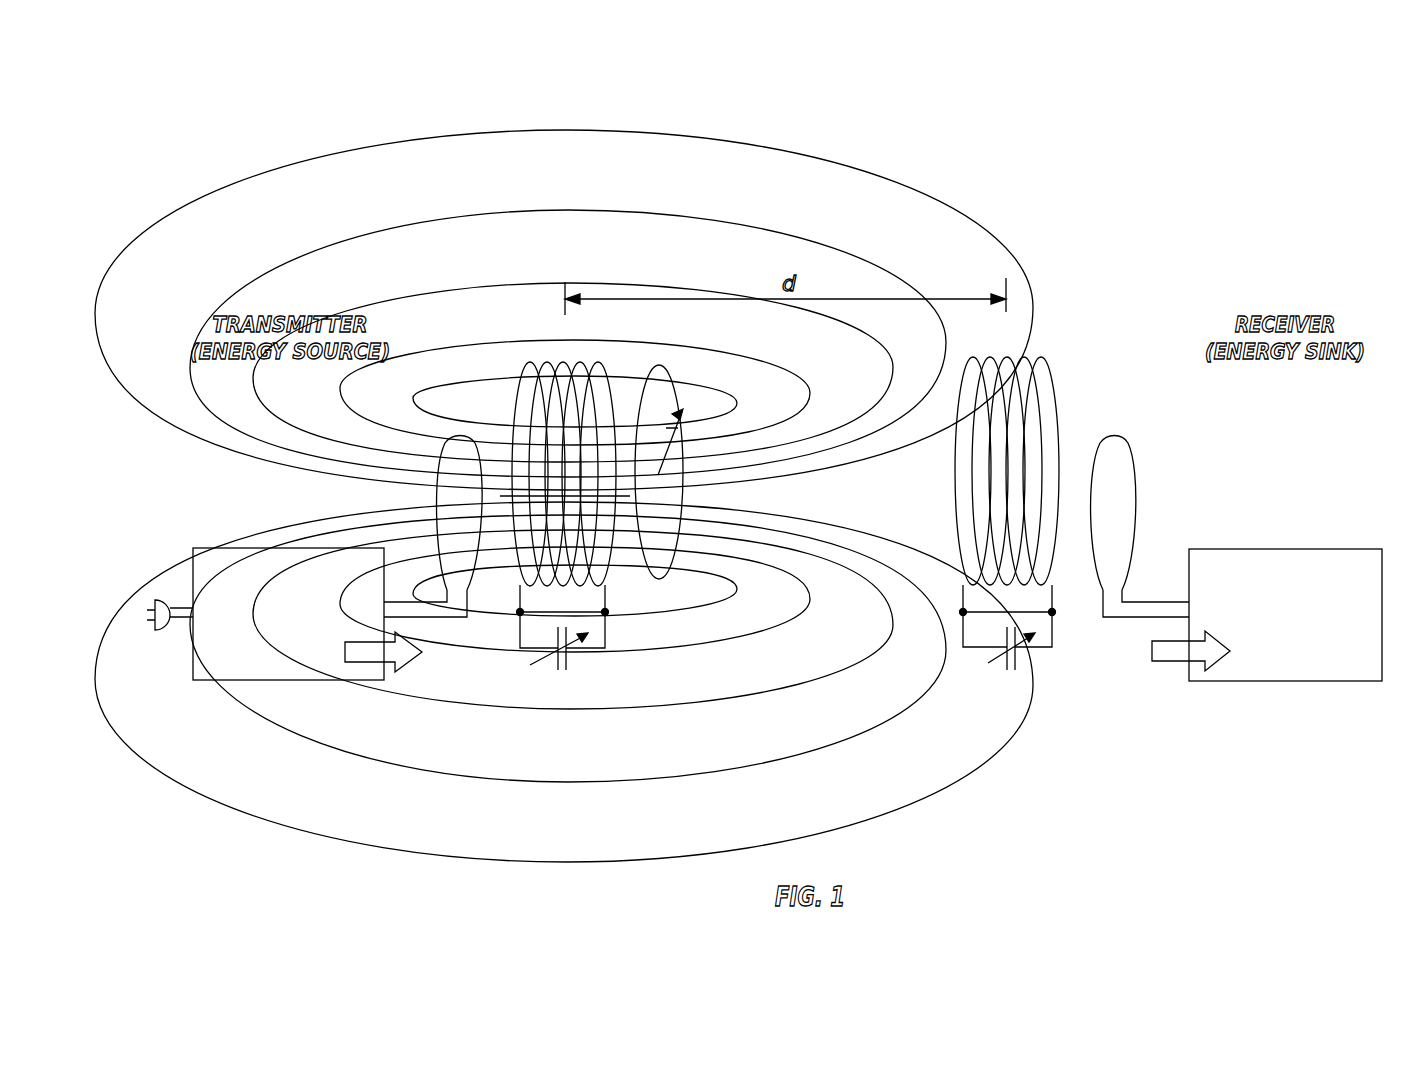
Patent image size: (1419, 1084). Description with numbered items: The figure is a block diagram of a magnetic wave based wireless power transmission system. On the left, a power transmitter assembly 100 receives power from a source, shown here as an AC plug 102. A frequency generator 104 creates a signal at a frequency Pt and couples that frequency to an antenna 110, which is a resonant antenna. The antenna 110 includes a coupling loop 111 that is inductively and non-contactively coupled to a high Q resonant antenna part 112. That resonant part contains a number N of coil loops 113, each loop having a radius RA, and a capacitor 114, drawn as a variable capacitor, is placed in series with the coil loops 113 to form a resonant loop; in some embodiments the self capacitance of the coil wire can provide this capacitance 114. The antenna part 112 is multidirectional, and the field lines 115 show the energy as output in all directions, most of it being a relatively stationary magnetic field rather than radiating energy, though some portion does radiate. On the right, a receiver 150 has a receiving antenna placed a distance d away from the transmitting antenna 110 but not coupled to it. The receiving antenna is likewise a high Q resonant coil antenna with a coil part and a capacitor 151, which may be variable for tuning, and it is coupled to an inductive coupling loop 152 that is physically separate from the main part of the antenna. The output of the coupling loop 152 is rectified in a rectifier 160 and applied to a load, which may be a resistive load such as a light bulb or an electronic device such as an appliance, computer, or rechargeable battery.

The power transmitter assembly 100 is at (236, 166).
The AC plug 102 is at (160, 600).
The frequency generator 104 is at (215, 548).
The antenna 110 is at (622, 717).
The coupling loop 111 is at (460, 440).
The high Q resonant antenna part 112 is at (582, 366).
The coil loops 113 is at (613, 373).
The capacitor 114 is at (568, 660).
The energy output 115 is at (814, 752).
The receiver 150 is at (1152, 304).
The capacitor 151 is at (965, 633).
The inductive coupling loop 152 is at (1113, 440).
The rectifier 160 is at (1360, 549).